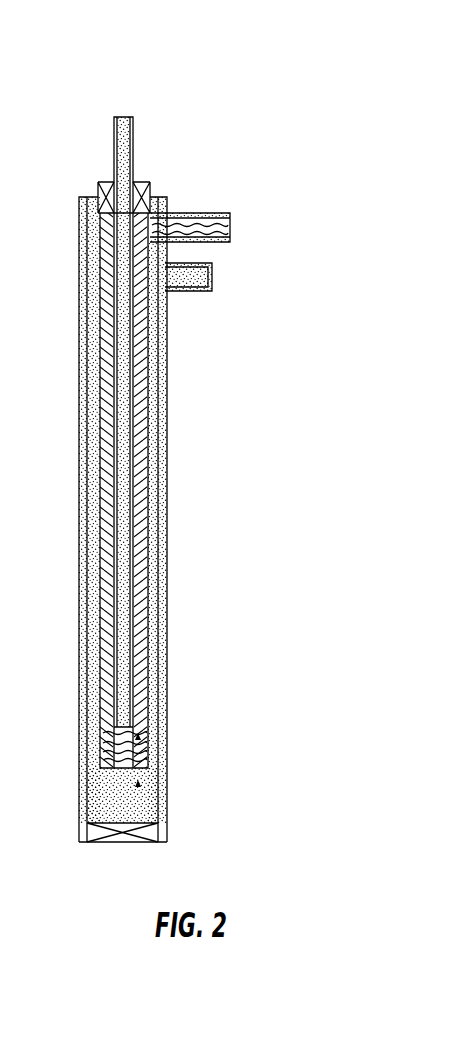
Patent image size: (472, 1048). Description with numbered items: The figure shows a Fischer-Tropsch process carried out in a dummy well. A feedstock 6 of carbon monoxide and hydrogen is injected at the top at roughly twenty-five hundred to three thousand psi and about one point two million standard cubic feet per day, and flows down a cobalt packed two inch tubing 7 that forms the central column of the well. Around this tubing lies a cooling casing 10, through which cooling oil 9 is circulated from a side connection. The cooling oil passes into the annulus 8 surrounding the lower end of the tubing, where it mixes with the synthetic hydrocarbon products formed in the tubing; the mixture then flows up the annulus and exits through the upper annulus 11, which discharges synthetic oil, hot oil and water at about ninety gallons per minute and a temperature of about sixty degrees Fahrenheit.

The feedstock 6 is at (123, 102).
The cobalt packed two inch tubing 7 is at (141, 380).
The annulus 8 is at (151, 705).
The cooling oil 9 is at (230, 278).
The cooling casing 10 is at (163, 470).
The annulus 11 is at (237, 227).